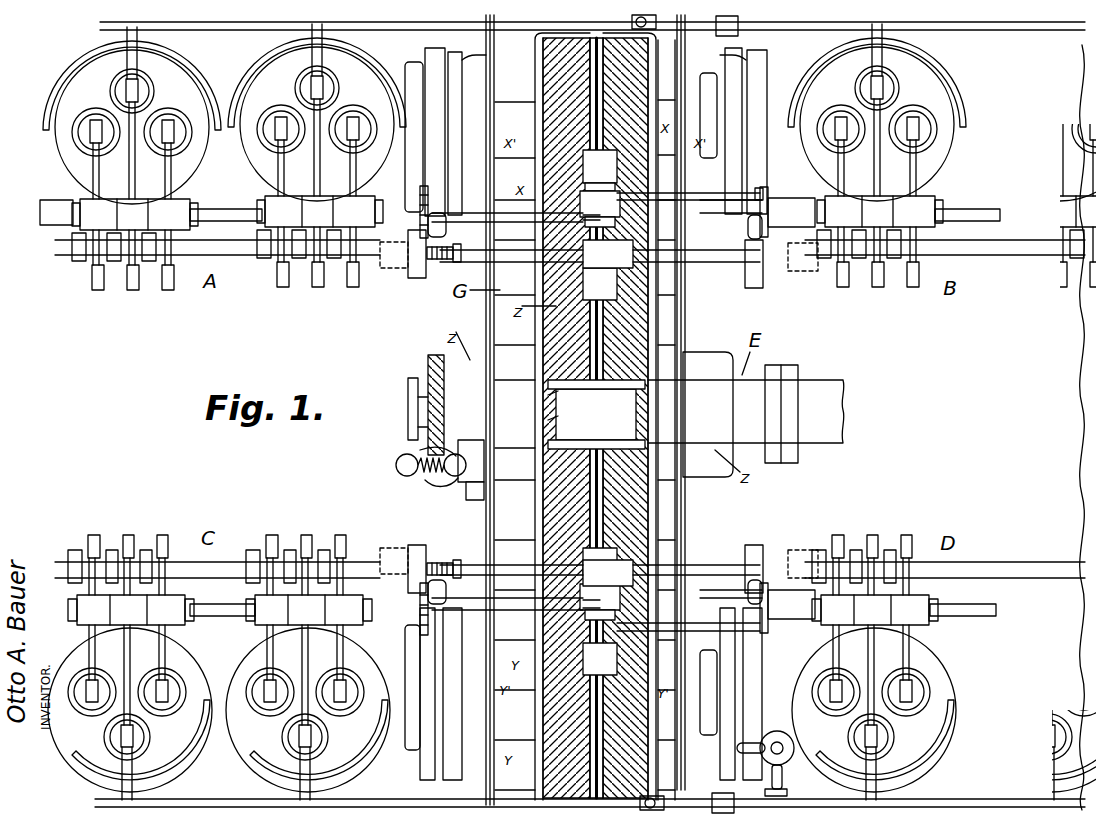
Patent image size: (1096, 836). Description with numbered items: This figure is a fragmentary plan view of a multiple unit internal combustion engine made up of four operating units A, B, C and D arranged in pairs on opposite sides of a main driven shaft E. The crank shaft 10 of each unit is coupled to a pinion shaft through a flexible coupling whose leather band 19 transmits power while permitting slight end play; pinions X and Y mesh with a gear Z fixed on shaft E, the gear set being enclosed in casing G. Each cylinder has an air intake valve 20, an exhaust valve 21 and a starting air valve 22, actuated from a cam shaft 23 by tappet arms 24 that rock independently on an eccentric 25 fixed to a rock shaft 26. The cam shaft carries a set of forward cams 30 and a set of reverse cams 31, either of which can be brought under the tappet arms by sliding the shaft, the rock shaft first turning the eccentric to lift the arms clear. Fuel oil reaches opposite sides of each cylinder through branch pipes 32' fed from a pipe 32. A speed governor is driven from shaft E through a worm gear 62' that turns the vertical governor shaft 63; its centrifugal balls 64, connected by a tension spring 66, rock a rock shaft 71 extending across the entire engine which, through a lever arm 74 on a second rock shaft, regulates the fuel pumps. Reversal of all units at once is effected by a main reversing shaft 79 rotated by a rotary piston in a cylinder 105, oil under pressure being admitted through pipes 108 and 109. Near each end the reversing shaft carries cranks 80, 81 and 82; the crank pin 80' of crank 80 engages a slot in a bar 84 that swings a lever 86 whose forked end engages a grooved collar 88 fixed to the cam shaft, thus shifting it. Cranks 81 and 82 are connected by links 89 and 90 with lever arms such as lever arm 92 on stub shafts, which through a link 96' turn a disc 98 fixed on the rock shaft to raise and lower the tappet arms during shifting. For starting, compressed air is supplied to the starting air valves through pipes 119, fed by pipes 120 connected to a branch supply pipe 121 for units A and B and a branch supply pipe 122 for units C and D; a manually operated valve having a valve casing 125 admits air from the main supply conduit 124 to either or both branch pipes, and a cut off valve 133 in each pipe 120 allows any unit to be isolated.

The crank shaft 10 is at (410, 80).
The band 19 is at (495, 79).
The air intake valve 20 is at (170, 700).
The exhaust valve 21 is at (92, 706).
The starting air valve 22 is at (110, 92).
The cam shaft 23 is at (208, 244).
The tappet arms 24 is at (94, 168).
The eccentric 25 is at (1078, 218).
The rock shaft 26 is at (218, 209).
The forward cams 30 is at (176, 244).
The reverse cams 31 is at (76, 270).
The pipe 32 is at (589, 407).
The branch pipes 32' is at (550, 404).
The worm gear 62' is at (422, 400).
The vertical shaft of the speed governor 63 is at (425, 482).
The centrifugal balls 64 is at (396, 470).
The tension spring 66 is at (440, 460).
The rock shaft 71 is at (495, 60).
The lever arm 74 is at (432, 58).
The main reversing shaft 79 is at (590, 126).
The crank 80 is at (623, 412).
The crank pin 80' is at (671, 413).
The crank 81 is at (612, 223).
The crank 82 is at (575, 195).
The bar 84 is at (520, 262).
The lever 86 is at (442, 262).
The collar 88 is at (410, 272).
The link 89 is at (520, 222).
The link 90 is at (728, 404).
The lever arm 92 is at (764, 194).
The link 96' is at (595, 408).
The disc 98 is at (424, 192).
The cylinder 105 is at (596, 414).
The pipe 108 is at (640, 392).
The pipe 109 is at (552, 410).
The pipe 119 is at (125, 78).
The pipes 120 is at (240, 26).
The branch supply pipe 121 is at (686, 80).
The branch supply pipe 122 is at (760, 762).
The main supply conduit 124 is at (700, 720).
The valve casing 125 is at (745, 740).
The cut off valve 133 is at (644, 16).